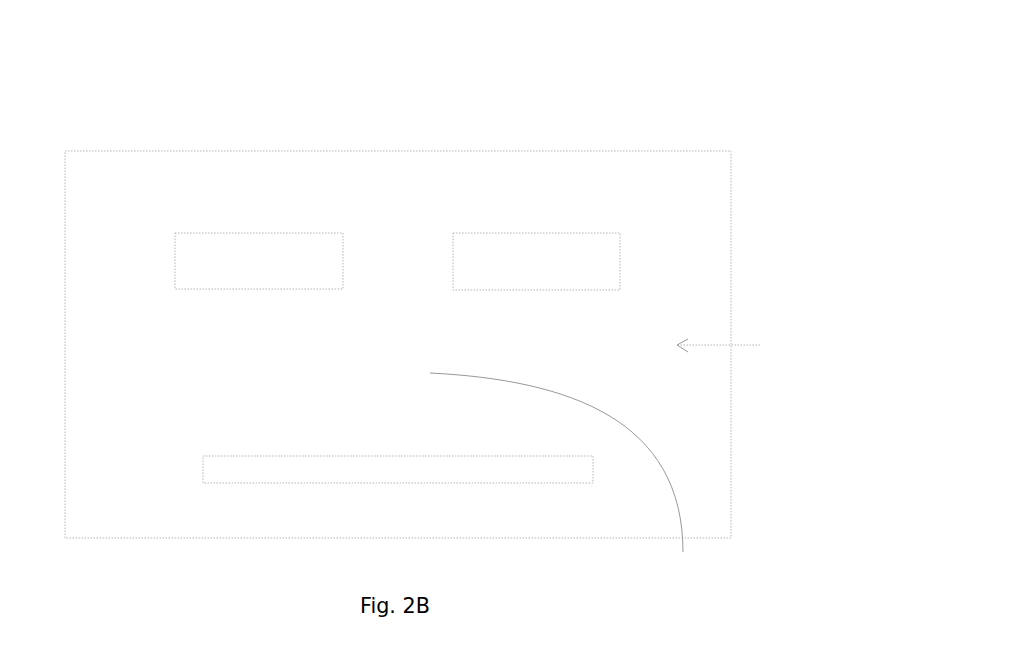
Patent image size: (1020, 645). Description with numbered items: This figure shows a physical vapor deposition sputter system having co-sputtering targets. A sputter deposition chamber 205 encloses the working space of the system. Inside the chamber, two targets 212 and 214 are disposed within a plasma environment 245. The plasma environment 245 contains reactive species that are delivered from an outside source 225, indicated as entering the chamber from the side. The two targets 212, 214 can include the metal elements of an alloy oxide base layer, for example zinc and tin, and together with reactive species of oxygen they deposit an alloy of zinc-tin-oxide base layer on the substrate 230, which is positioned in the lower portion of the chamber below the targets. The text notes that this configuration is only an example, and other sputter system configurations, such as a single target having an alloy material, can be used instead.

The sputter deposition chamber 205 is at (82, 110).
The target 212 is at (258, 260).
The target 214 is at (536, 261).
The outside source 225 is at (705, 345).
The substrate 230 is at (232, 470).
The plasma environment 245 is at (565, 483).